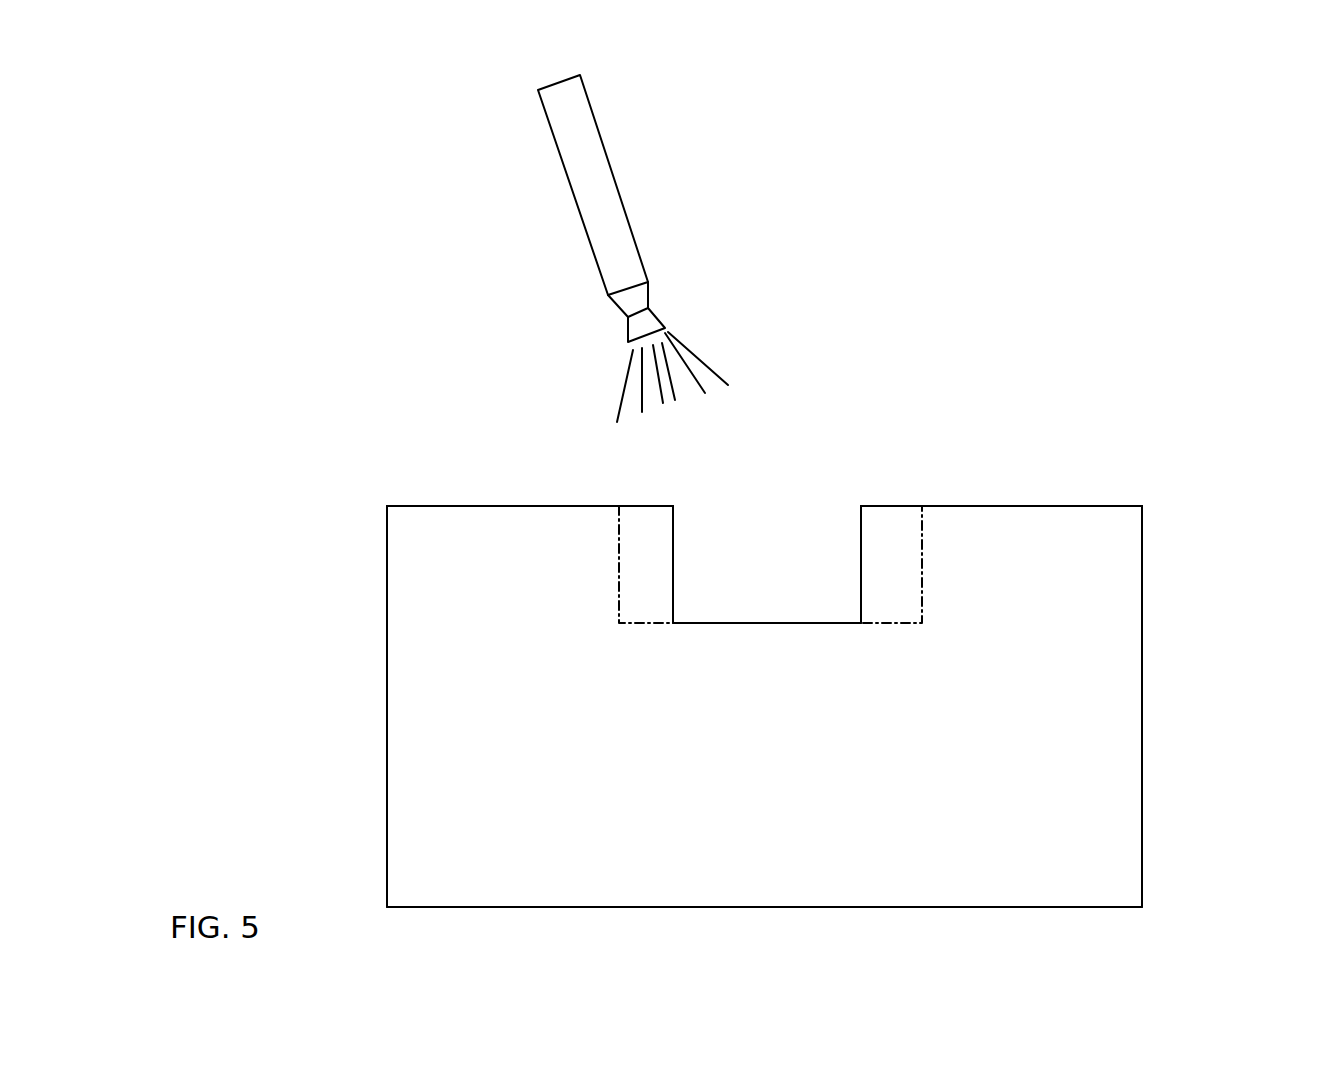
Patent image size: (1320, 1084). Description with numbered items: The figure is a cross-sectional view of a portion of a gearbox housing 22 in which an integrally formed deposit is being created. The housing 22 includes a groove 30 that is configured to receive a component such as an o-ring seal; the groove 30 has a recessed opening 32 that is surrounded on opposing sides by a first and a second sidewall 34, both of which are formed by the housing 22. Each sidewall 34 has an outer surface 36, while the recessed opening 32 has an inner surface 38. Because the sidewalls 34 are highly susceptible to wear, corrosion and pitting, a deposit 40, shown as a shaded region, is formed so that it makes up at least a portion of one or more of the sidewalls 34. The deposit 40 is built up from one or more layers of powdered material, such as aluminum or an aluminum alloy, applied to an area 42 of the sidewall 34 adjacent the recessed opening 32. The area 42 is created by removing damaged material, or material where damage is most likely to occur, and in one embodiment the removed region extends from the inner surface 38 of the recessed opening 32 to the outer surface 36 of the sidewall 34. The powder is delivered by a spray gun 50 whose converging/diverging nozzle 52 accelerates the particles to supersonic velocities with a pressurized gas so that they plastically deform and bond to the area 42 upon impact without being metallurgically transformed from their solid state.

The gearbox housing 22 is at (323, 493).
The groove 30 is at (847, 460).
The recessed opening 32 is at (744, 580).
The sidewall 34 is at (483, 570).
The outer surface 36 is at (523, 506).
The inner surface 38 is at (804, 623).
The deposit 40 is at (653, 532).
The area 42 is at (617, 592).
The spray gun 50 is at (688, 120).
The converging/diverging nozzle 52 is at (648, 327).